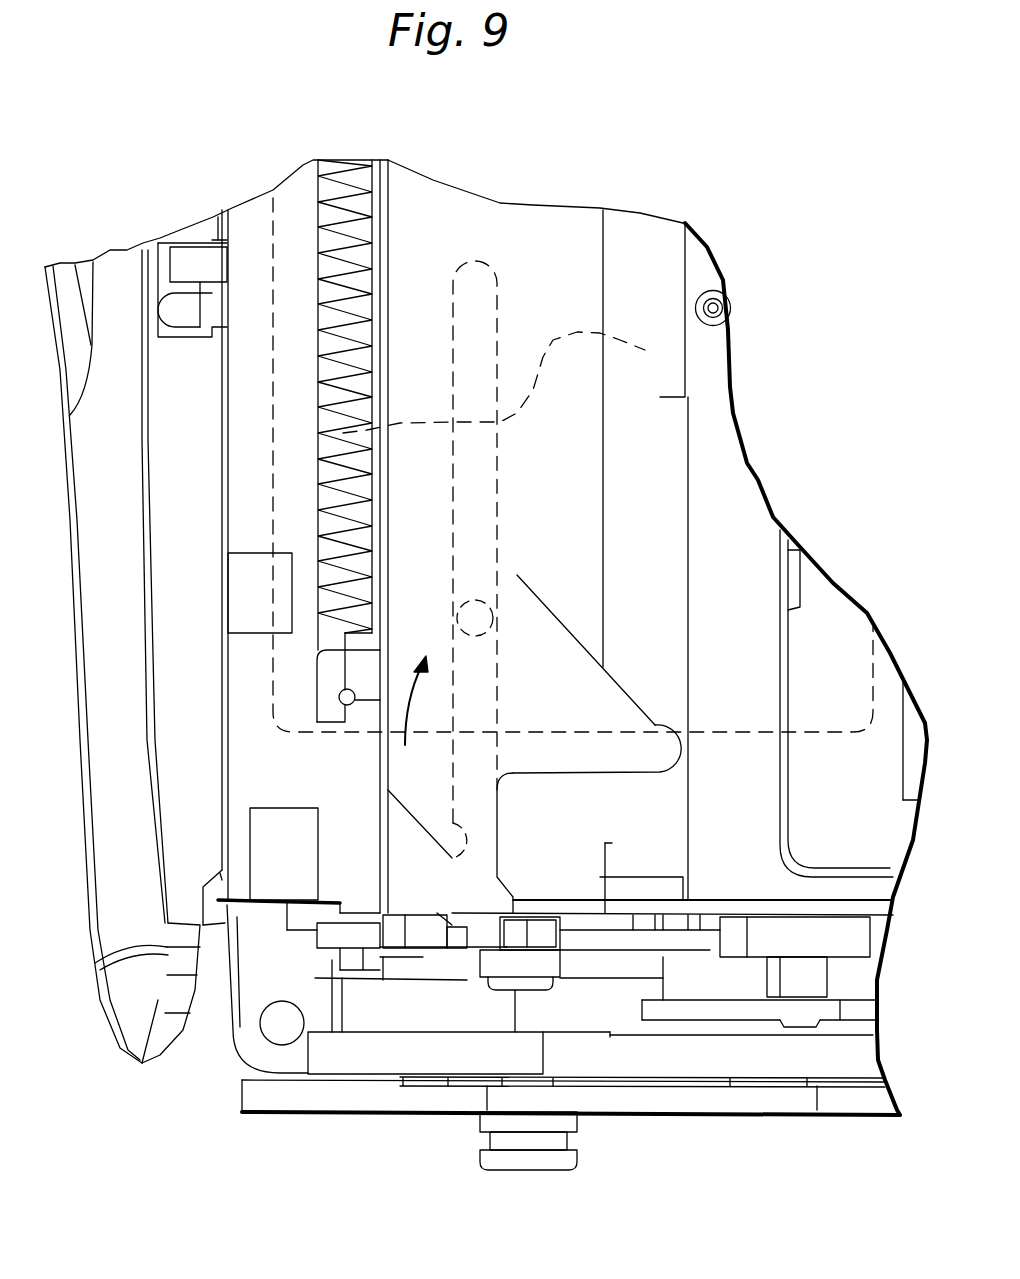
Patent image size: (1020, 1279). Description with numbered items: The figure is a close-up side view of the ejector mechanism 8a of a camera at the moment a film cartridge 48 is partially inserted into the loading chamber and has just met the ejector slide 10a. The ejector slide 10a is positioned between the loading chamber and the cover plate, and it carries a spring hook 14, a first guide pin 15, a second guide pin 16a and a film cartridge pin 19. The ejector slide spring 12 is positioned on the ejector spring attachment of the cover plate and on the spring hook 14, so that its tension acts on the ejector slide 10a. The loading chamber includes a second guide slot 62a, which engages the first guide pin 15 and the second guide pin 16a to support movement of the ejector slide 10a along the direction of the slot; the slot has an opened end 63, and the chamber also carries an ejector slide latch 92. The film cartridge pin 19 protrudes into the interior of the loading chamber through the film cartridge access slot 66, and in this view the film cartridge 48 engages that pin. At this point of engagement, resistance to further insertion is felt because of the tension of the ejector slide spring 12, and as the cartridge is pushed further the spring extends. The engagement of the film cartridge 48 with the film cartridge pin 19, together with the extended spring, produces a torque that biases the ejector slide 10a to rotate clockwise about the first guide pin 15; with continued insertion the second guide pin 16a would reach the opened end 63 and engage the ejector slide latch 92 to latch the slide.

The ejector mechanism 8a is at (767, 281).
The ejector slide 10a is at (400, 738).
The ejector slide spring 12 is at (318, 403).
The spring hook 14 is at (317, 687).
The first guide pin 15 is at (520, 591).
The second guide pin 16a is at (327, 918).
The film cartridge pin 19 is at (630, 723).
The film cartridge 48 is at (825, 703).
The second guide slot 62a is at (508, 490).
The opened end 63 is at (459, 991).
The film cartridge access slot 66 is at (630, 783).
The ejector slide latch 92 is at (486, 971).